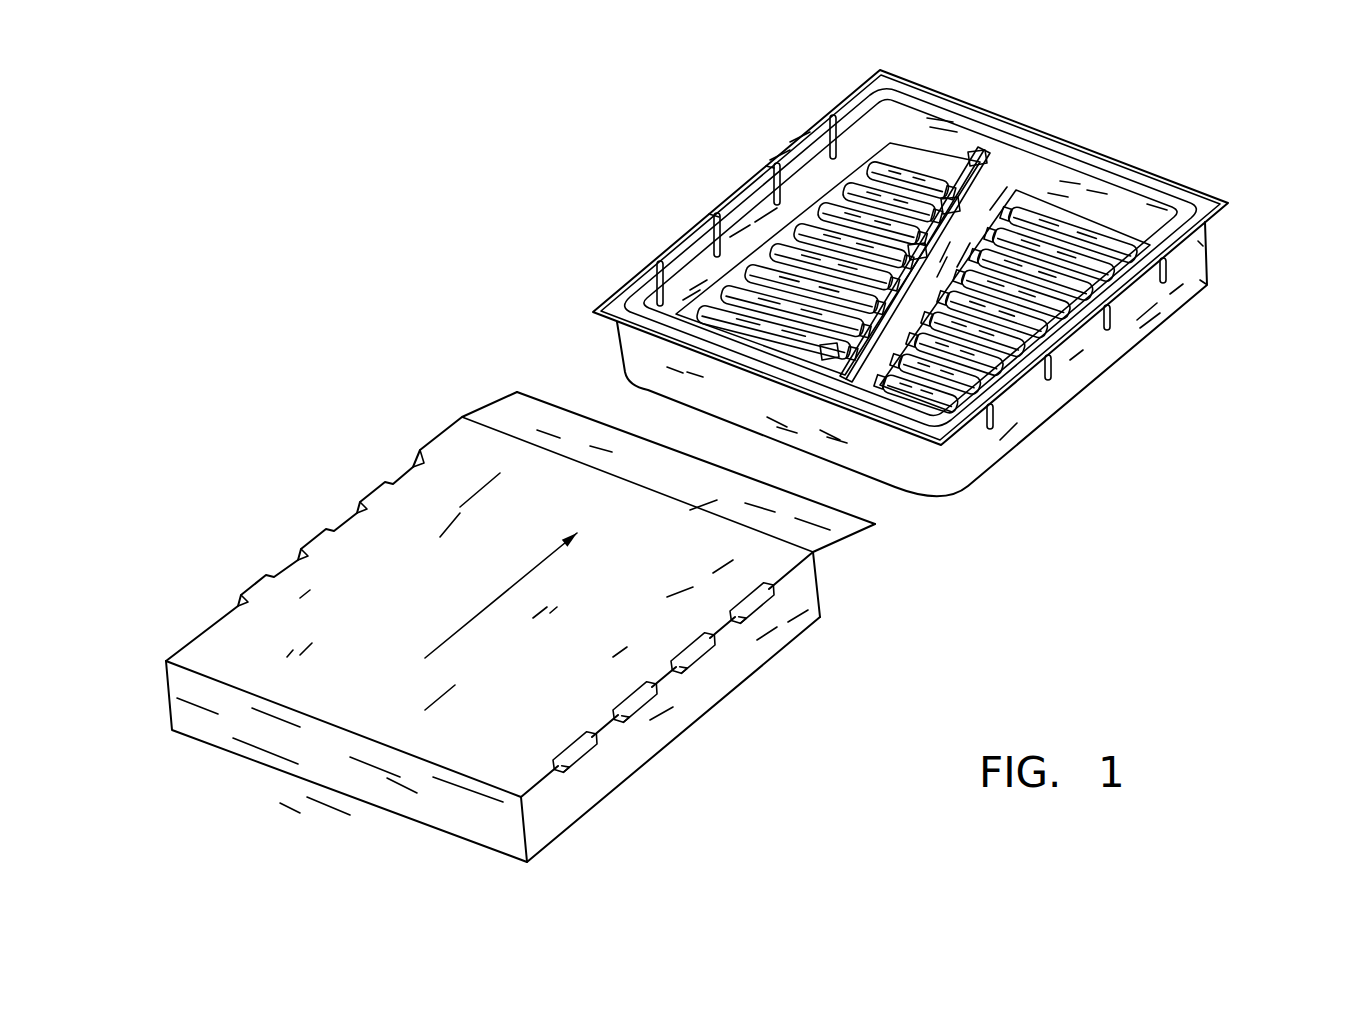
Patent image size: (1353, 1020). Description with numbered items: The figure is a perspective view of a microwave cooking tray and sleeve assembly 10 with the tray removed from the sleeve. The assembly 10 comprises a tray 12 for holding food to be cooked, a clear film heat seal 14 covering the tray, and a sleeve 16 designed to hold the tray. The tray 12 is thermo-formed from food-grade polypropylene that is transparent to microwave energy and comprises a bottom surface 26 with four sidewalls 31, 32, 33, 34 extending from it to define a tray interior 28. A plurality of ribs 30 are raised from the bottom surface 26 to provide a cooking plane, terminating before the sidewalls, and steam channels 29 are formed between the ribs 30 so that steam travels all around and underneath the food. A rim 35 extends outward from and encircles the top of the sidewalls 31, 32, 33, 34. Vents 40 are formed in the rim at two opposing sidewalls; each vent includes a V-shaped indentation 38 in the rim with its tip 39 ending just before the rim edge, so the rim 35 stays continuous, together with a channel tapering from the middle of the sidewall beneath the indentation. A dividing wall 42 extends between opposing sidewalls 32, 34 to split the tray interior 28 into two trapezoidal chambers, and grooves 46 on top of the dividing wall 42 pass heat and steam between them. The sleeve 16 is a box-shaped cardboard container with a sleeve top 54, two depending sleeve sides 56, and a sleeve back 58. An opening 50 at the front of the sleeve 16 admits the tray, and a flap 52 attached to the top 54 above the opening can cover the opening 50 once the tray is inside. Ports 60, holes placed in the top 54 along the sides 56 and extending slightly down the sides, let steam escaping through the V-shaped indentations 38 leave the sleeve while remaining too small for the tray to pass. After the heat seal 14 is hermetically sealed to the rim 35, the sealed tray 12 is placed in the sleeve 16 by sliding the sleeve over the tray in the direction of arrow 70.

The microwave cooking tray and sleeve assembly 10 is at (425, 265).
The tray 12 is at (1030, 415).
The heat seal 14 is at (595, 312).
The sleeve 16 is at (813, 618).
The bottom surface 26 is at (917, 160).
The tray interior 28 is at (672, 320).
The steam channels 29 is at (705, 262).
The ribs 30 is at (868, 185).
The sidewall 31 is at (860, 440).
The sidewall 32 is at (1117, 340).
The sidewall 33 is at (1116, 216).
The sidewall 34 is at (747, 215).
The rim 35 is at (1203, 188).
The V-shaped indentation 38 is at (832, 118).
The tip 39 is at (711, 216).
The vents 40 is at (770, 167).
The dividing wall 42 is at (1023, 215).
The grooves 46 is at (982, 155).
The opening 50 is at (845, 583).
The flap 52 is at (513, 417).
The sleeve top 54 is at (460, 463).
The sleeve sides 56 is at (550, 807).
The sleeve back 58 is at (232, 725).
The ports 60 is at (347, 515).
The arrow 70 is at (480, 612).